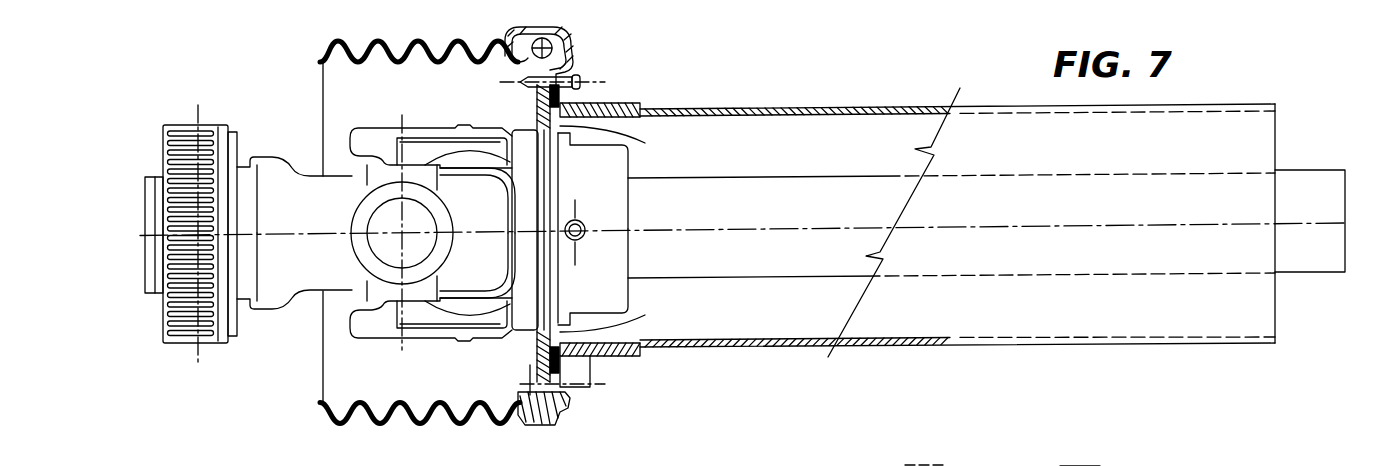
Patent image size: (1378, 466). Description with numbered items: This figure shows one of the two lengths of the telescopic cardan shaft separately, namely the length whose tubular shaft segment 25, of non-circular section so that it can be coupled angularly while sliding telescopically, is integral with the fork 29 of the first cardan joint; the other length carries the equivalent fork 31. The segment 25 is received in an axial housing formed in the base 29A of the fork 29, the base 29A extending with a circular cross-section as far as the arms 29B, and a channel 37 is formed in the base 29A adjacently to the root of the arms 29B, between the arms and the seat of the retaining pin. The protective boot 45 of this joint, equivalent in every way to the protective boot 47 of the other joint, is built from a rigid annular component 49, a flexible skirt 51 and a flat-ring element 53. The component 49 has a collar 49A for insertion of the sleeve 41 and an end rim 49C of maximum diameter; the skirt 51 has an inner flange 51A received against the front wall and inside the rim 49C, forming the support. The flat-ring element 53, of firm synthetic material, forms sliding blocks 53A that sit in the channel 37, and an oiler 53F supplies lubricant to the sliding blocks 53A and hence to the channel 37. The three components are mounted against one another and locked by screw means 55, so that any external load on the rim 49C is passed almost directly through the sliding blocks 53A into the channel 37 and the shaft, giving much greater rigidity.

The tubular shaft segment 25 is at (845, 196).
The fork 29 is at (368, 247).
The base of the fork 29A is at (522, 282).
The arm of the fork 29B is at (333, 330).
The fork 31 is at (966, 465).
The channel 37 is at (497, 211).
The sleeve 41 is at (845, 108).
The protective boot 45 is at (440, 422).
The protective boot 47 is at (1082, 462).
The rigid annular component 49 is at (577, 51).
The collar 49A is at (627, 102).
The end rim 49C is at (460, 44).
The flexible skirt 51 is at (400, 247).
The inner flange 51A is at (532, 107).
The flat-ring element 53 is at (626, 124).
The sliding block 53A is at (540, 345).
The oiler 53F is at (590, 388).
The screw means 55 is at (578, 73).